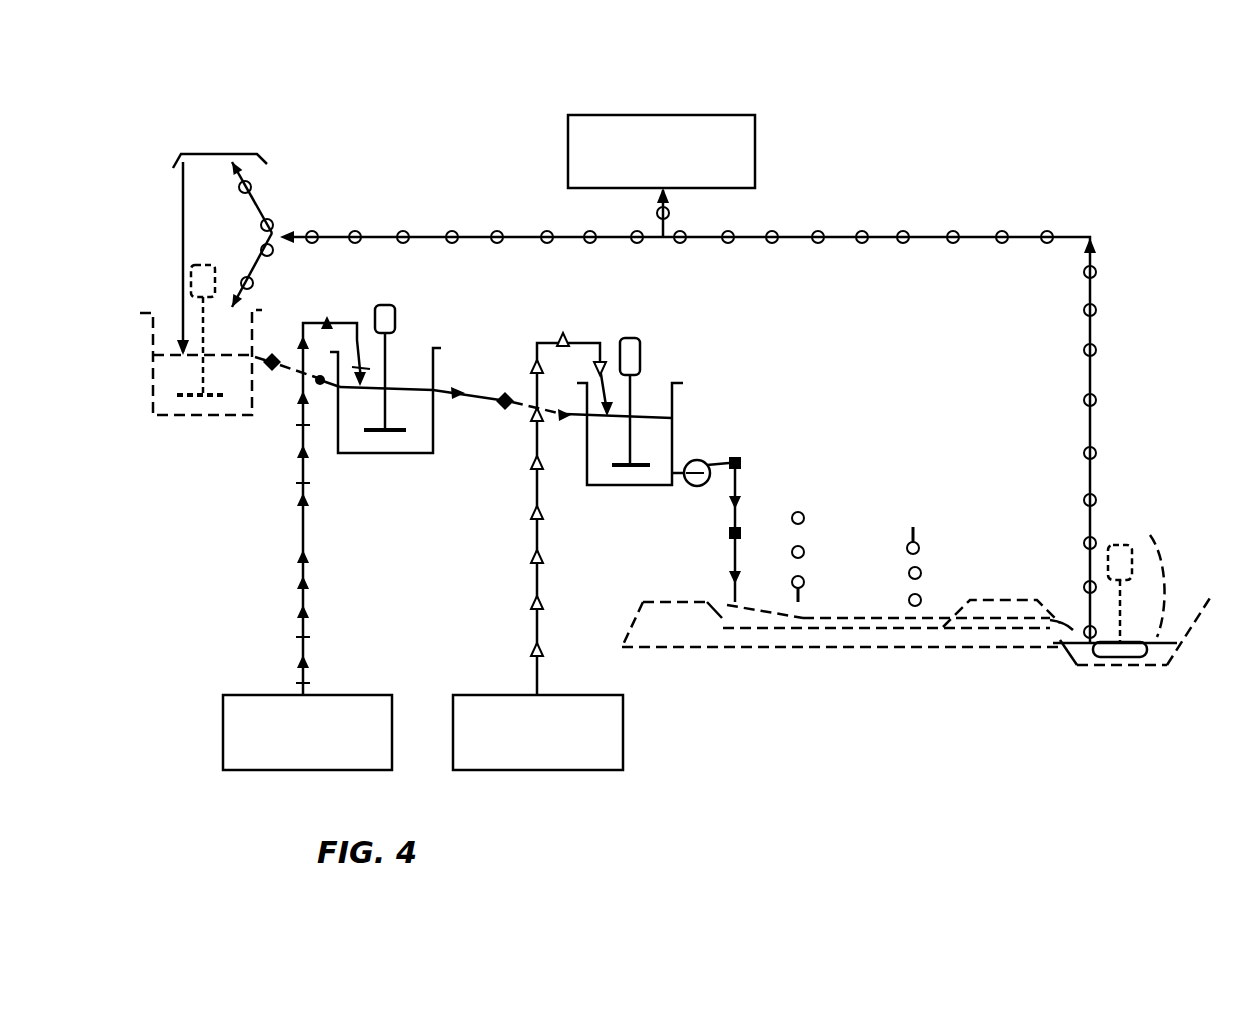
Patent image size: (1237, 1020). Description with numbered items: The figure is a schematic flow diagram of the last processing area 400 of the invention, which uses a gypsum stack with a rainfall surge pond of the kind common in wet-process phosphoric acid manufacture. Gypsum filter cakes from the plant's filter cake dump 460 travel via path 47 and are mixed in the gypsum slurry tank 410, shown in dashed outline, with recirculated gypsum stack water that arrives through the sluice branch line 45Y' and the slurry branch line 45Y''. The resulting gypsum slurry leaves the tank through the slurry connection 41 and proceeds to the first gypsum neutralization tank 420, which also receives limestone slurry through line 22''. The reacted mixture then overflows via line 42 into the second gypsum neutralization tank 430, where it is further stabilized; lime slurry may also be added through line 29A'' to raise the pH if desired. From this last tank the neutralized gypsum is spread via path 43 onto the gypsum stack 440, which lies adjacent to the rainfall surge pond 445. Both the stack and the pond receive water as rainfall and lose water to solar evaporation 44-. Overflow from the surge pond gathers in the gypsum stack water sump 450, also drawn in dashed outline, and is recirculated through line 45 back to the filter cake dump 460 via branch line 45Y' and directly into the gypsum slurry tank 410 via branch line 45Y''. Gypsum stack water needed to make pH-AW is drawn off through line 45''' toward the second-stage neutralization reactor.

The last processing area 400 is at (455, 76).
The gypsum stack water line 45 is at (705, 420).
The gypsum stack water line to stage 2 reactor 45''' is at (661, 176).
The filter cake dump 460 is at (267, 164).
The filter cake path 47 is at (185, 182).
The sluice branch line 45Y' is at (284, 197).
The slurry branch line 45Y'' is at (236, 270).
The gypsum slurry tank 410 is at (253, 414).
The gypsum slurry line with valve 41 is at (279, 358).
The overflow line 42 is at (470, 390).
The gypsum neutralization tank No. 1 420 is at (434, 430).
The limestone slurry line 22'' is at (299, 540).
The lime slurry line 29A'' is at (531, 566).
The gypsum neutralization tank No. 2 430 is at (676, 462).
The neutralized gypsum path 43 is at (732, 542).
The solar evaporation 44- is at (920, 548).
The gypsum stack 440 is at (620, 645).
The rainfall surge pond 445 is at (873, 607).
The gypsum stack water sump 450 is at (1150, 540).